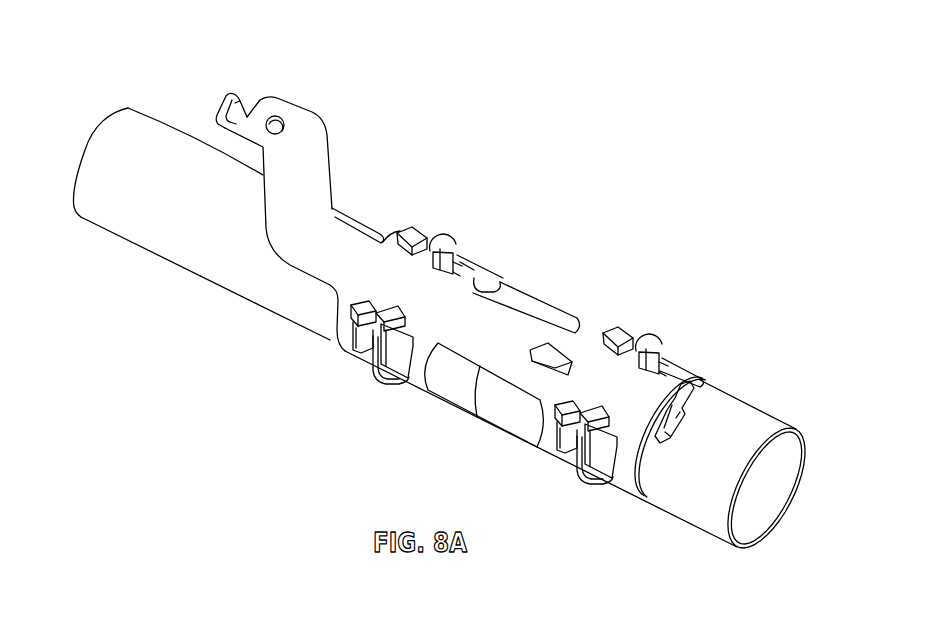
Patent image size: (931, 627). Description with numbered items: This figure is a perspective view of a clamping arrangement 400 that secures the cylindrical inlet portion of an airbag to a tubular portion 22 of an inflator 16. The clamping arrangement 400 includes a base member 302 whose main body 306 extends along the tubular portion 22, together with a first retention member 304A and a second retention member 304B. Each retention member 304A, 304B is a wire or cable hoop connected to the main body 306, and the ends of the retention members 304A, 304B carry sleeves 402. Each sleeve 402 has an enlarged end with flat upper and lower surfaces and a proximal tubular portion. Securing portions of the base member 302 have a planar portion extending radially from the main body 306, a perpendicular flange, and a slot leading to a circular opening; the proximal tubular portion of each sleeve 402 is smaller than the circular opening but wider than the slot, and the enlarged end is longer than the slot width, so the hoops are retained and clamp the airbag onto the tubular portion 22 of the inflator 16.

The inflator 16 is at (688, 522).
The tubular portion 22 is at (747, 405).
The base member 302 is at (356, 226).
The first retention member 304A is at (588, 487).
The second retention member 304B is at (377, 380).
The main body 306 is at (502, 317).
The clamping arrangement 400 is at (493, 371).
The sleeve 402 is at (593, 333).